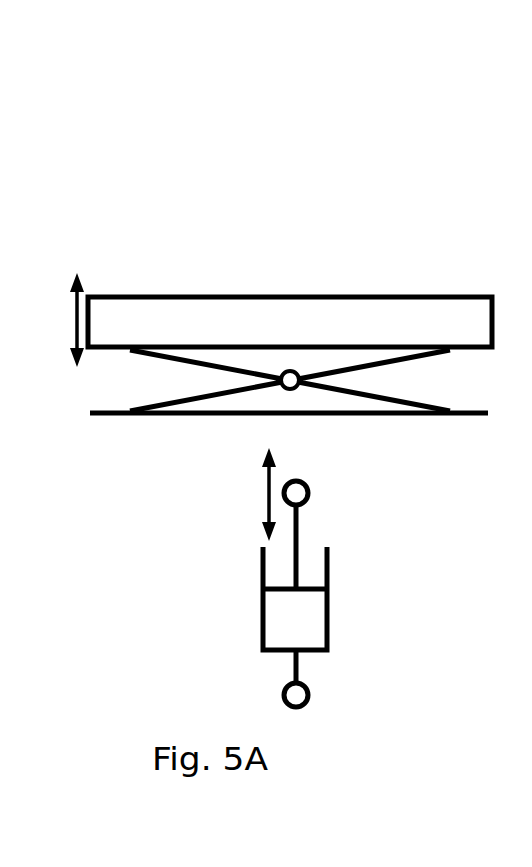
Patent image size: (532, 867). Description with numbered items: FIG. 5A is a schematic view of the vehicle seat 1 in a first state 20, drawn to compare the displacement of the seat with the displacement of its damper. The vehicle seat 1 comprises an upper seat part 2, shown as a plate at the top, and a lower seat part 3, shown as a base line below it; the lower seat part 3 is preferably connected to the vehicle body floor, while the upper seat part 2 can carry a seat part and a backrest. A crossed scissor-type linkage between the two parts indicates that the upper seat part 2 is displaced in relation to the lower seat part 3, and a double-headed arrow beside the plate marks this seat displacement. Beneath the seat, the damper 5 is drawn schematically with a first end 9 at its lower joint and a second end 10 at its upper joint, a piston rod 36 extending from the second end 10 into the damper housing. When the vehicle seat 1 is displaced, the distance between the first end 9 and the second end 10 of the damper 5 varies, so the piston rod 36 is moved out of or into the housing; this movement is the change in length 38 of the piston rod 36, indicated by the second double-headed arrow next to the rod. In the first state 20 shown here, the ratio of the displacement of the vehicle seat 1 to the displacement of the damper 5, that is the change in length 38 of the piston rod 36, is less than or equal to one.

The vehicle seat 1 is at (325, 224).
The first state 20 is at (392, 240).
The upper seat part 2 is at (163, 323).
The lower seat part 3 is at (176, 418).
The change in length 38 is at (264, 496).
The second end 10 is at (318, 490).
The piston rod 36 is at (305, 532).
The damper 5 is at (335, 612).
The first end 9 is at (312, 692).